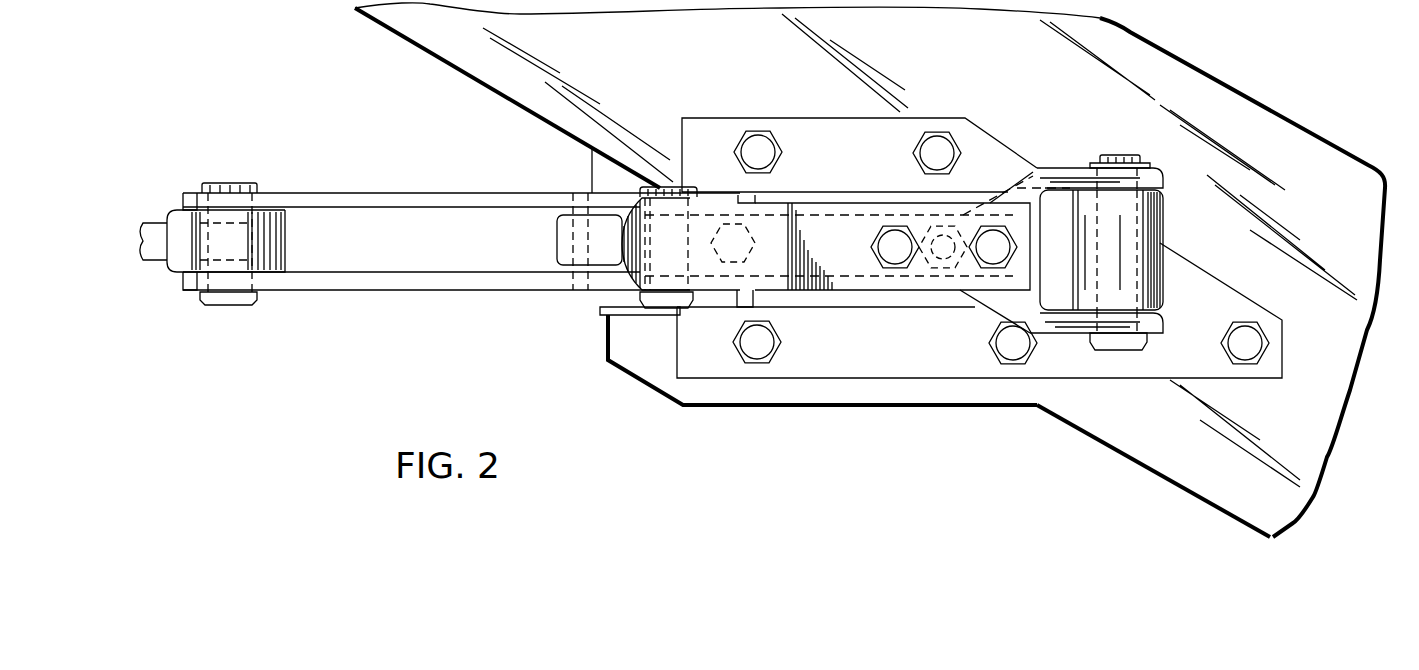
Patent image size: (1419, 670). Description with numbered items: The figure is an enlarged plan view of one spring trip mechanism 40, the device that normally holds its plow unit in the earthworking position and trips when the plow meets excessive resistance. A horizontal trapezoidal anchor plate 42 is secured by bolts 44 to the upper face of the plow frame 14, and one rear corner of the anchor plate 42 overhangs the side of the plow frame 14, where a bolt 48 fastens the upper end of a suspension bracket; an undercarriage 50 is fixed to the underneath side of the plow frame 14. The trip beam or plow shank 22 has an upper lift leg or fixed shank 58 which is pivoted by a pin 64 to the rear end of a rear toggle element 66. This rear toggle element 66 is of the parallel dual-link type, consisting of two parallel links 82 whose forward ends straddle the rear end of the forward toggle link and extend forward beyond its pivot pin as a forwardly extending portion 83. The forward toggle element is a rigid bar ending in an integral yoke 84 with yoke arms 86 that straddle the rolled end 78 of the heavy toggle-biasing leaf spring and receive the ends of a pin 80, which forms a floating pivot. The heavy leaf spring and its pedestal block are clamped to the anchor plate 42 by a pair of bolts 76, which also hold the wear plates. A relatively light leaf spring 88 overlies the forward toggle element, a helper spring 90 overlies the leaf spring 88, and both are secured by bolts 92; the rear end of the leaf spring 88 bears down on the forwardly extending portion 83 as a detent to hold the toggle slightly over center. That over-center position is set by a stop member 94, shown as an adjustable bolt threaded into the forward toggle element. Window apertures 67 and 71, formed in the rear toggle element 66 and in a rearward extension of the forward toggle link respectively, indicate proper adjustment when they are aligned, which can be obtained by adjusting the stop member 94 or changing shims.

The plow frame 14 is at (995, 54).
The trip beam or plow shank 22 is at (165, 275).
The spring trip mechanism 40 is at (648, 133).
The anchor plate 42 is at (697, 135).
The bolts 44 is at (757, 137).
The bolt 48 is at (757, 353).
The undercarriage 50 is at (963, 395).
The upper lift leg or fixed shank 58 is at (157, 227).
The pin 64 is at (233, 187).
The rear toggle element 66 is at (461, 236).
The window aperture 67 is at (573, 202).
The window aperture 71 is at (573, 233).
The bolts 76 is at (860, 230).
The rolled end 78 is at (1153, 227).
The pin 80 is at (1123, 157).
The parallel links 82 is at (343, 198).
The forwardly extending portion 83 is at (715, 193).
The yoke 84 is at (1032, 180).
The yoke arms 86 is at (1162, 173).
The leaf spring 88 is at (620, 233).
The helper spring 90 is at (817, 207).
The bolts 92 is at (880, 252).
The stop member 94 is at (943, 250).